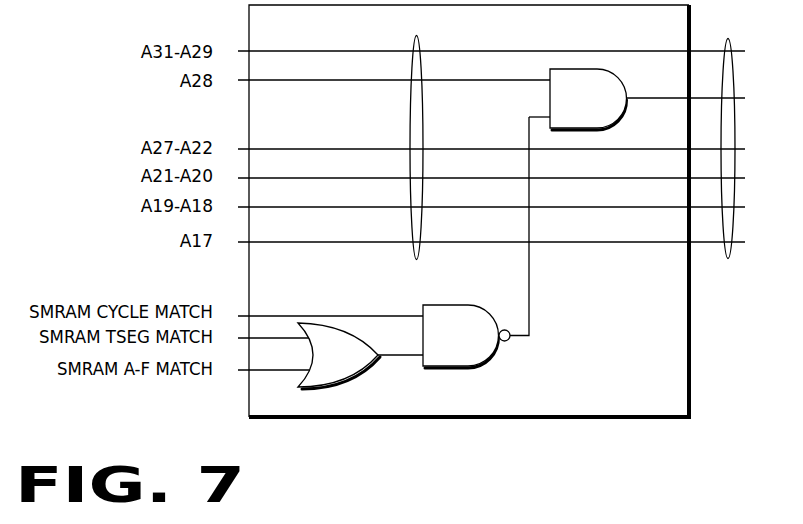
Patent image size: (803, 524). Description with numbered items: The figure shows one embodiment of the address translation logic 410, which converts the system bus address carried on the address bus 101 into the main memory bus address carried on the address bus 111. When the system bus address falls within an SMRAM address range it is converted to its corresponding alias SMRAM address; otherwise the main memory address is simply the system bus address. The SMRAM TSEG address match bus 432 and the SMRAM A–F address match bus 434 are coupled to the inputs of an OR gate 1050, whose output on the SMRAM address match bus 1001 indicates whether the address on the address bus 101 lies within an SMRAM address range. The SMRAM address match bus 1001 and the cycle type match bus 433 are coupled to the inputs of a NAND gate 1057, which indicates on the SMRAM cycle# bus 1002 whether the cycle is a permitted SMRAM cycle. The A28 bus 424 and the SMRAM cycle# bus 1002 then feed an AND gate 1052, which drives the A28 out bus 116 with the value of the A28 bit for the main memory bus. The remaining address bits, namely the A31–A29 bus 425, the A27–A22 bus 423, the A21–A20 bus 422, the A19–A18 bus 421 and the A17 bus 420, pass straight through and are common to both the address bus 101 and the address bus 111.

The address translation logic 410 is at (469, 211).
The A31–A29 bus 425 is at (258, 53).
The A28 bus 424 is at (258, 82).
The A27–A22 bus 423 is at (258, 151).
The A21–A20 bus 422 is at (258, 180).
The A19–A18 bus 421 is at (258, 209).
The A17 bus 420 is at (258, 244).
The cycle type match bus 433 is at (258, 318).
The SMRAM TSEG address match bus 432 is at (258, 340).
The SMRAM A–F address match bus 434 is at (257, 372).
The address bus 101 is at (423, 42).
The address bus 111 is at (735, 45).
The A28 out bus 116 is at (635, 94).
The AND gate 1052 is at (578, 99).
The NAND gate 1057 is at (466, 336).
The OR gate 1050 is at (339, 356).
The SMRAM address match bus 1001 is at (393, 351).
The SMRAM cycle# bus 1002 is at (531, 308).